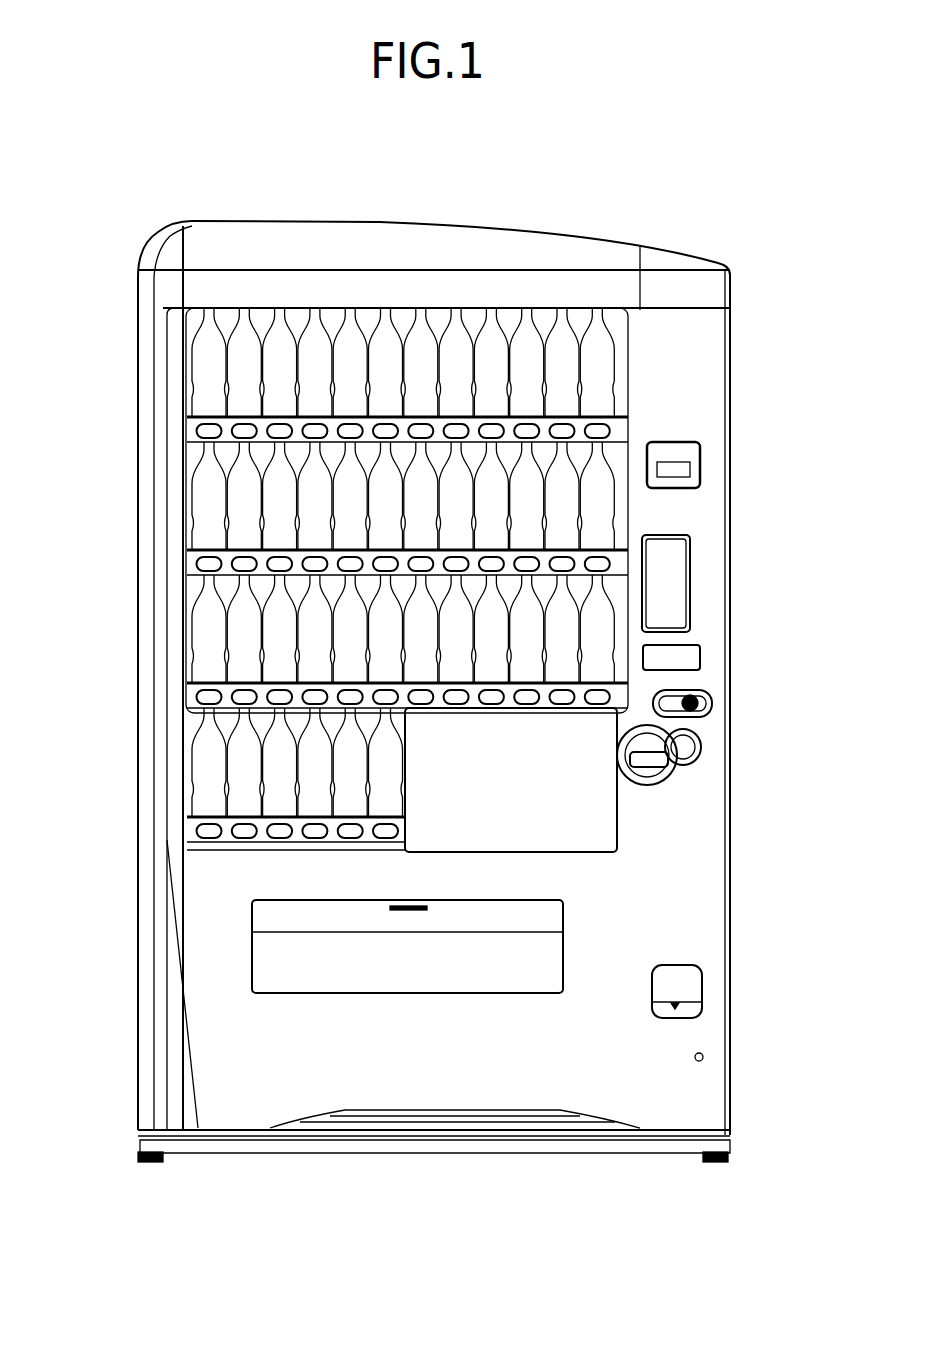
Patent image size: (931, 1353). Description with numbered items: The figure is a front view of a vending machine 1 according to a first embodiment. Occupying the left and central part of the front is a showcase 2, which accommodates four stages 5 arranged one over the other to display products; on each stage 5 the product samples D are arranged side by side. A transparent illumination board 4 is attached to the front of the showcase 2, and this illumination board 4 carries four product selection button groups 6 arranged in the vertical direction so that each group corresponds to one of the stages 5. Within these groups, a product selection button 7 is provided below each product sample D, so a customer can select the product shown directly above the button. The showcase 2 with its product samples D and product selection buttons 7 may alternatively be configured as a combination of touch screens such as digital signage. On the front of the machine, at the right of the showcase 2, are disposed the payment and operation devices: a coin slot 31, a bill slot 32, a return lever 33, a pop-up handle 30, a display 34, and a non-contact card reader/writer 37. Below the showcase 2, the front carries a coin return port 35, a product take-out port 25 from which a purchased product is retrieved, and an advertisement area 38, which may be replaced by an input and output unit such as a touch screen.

The vending machine 1 is at (749, 155).
The showcase 2 is at (186, 455).
The illumination board 4 is at (192, 332).
The stage 5 is at (193, 424).
The product selection button group 6 is at (178, 434).
The product selection button 7 is at (243, 433).
The product sample D is at (203, 507).
The product take-out port 25 is at (563, 952).
The pop-up handle 30 is at (712, 703).
The coin slot 31 is at (686, 752).
The bill slot 32 is at (700, 465).
The return lever 33 is at (655, 765).
The display 34 is at (700, 657).
The coin return port 35 is at (702, 990).
The non-contact card reader/writer 37 is at (690, 590).
The advertisement area 38 is at (585, 853).